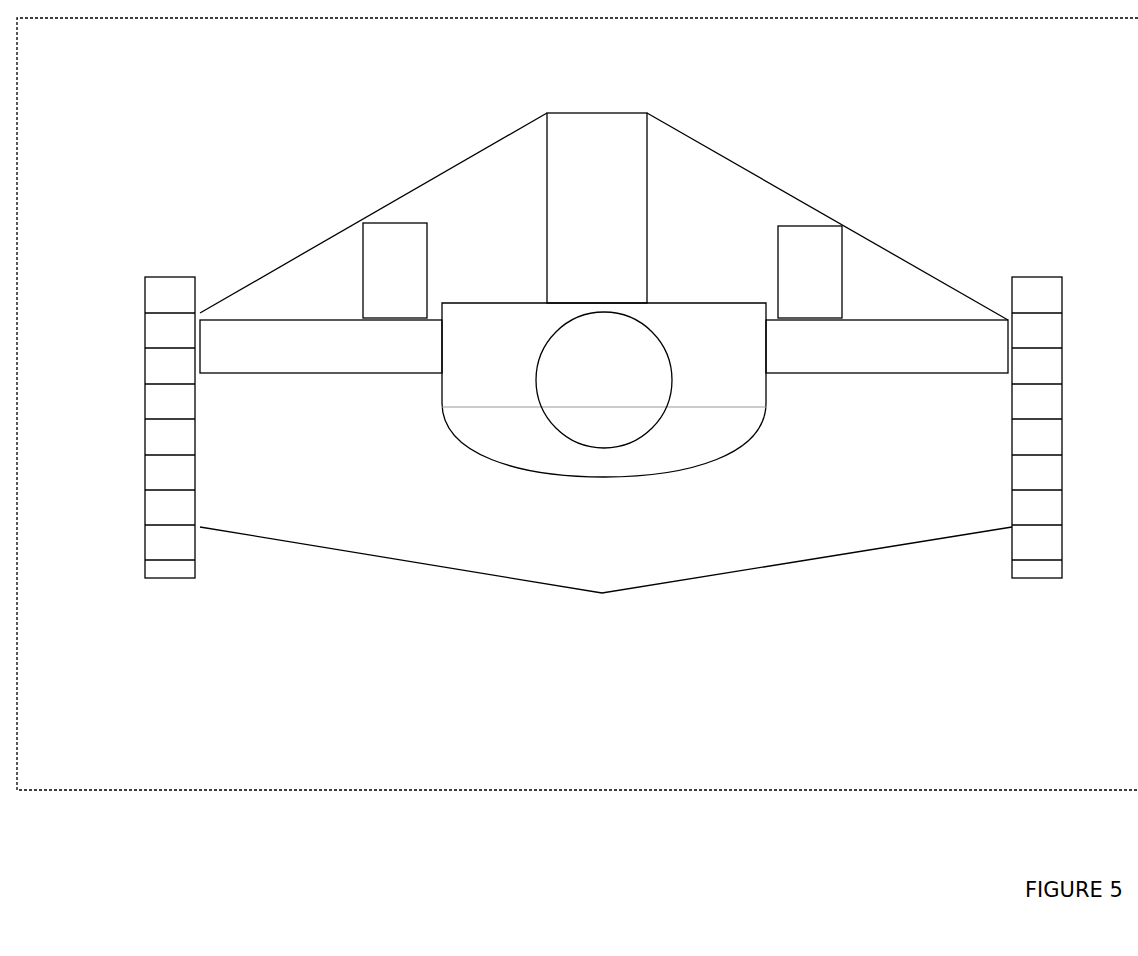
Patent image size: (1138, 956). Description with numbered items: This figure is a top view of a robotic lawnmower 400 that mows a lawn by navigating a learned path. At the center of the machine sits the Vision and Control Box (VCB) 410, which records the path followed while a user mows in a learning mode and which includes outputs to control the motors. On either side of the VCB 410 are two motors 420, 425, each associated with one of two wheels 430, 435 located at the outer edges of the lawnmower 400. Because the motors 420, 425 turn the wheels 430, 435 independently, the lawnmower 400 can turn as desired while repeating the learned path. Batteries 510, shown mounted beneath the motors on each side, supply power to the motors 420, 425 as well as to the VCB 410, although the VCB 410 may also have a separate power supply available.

The lawnmower 400 is at (577, 404).
The Vision and Control Box (VCB) 410 is at (672, 327).
The motor 420 is at (932, 306).
The motor 425 is at (286, 300).
The wheel 430 is at (993, 561).
The wheel 435 is at (218, 557).
The batteries 510 is at (826, 337).